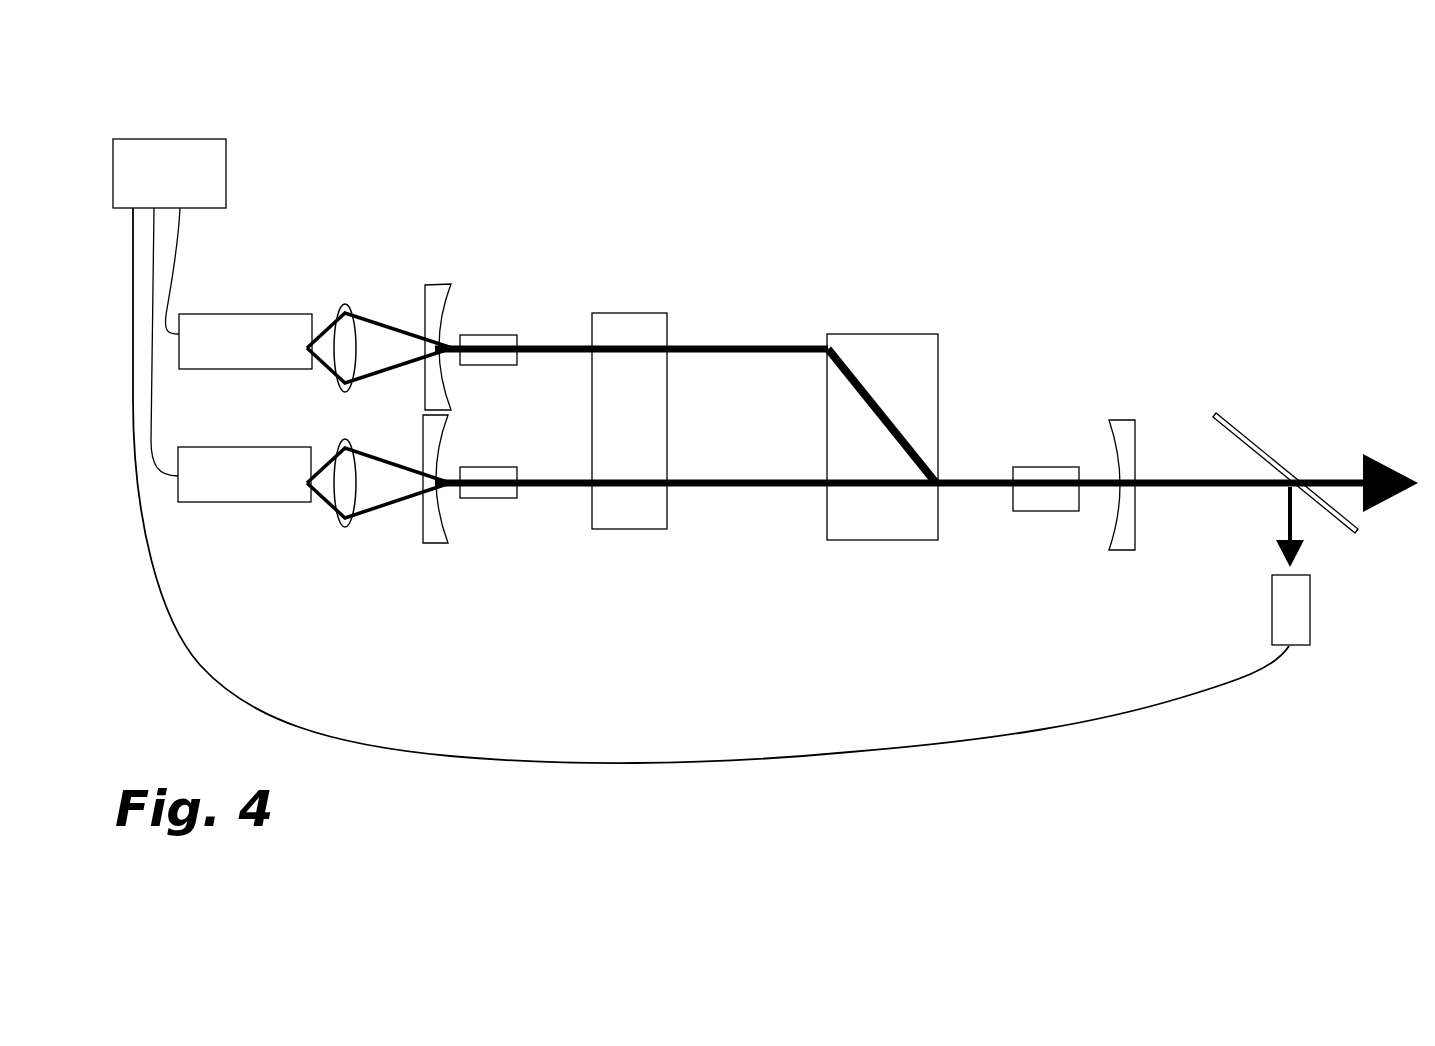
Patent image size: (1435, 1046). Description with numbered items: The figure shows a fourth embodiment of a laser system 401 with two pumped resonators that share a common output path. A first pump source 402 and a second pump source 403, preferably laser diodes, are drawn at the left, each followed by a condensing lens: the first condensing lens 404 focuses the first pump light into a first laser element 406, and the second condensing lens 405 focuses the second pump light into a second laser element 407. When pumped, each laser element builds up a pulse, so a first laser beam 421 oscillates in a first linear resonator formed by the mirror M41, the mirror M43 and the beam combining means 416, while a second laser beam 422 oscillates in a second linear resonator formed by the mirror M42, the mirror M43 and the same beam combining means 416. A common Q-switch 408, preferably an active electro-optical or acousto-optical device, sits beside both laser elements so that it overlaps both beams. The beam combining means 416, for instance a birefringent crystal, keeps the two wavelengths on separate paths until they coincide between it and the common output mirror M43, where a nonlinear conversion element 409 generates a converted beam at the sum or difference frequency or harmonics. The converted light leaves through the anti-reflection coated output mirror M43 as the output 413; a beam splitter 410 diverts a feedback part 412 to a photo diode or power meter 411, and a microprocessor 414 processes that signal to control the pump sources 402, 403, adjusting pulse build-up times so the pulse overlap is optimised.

The laser system 401 is at (892, 164).
The first pump source 402 is at (260, 325).
The second pump source 403 is at (238, 490).
The first condensing lens 404 is at (348, 328).
The second condensing lens 405 is at (340, 520).
The first laser element 406 is at (497, 335).
The second laser element 407 is at (500, 492).
The Q-switch 408 is at (660, 509).
The nonlinear conversion element 409 is at (1030, 505).
The beam splitter 410 is at (1220, 413).
The photo diode 411 is at (1300, 620).
The feedback part 412 is at (1292, 517).
The output 413 is at (1314, 475).
The microprocessor 414 is at (197, 143).
The beam combining means 416 is at (883, 528).
The first laser beam 421 is at (700, 347).
The second laser beam 422 is at (700, 479).
The mirror M41 is at (437, 292).
The mirror M42 is at (433, 530).
The common output mirror M43 is at (1163, 577).